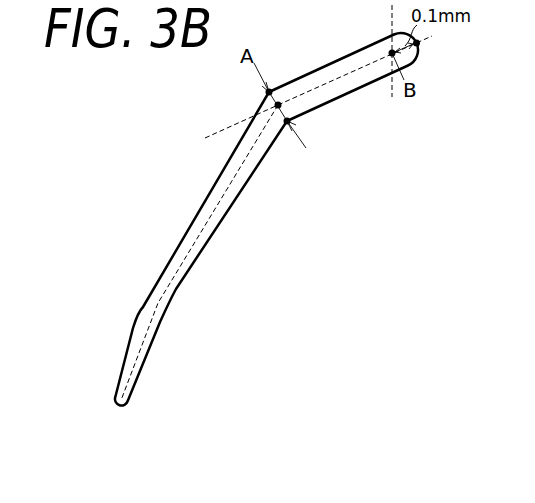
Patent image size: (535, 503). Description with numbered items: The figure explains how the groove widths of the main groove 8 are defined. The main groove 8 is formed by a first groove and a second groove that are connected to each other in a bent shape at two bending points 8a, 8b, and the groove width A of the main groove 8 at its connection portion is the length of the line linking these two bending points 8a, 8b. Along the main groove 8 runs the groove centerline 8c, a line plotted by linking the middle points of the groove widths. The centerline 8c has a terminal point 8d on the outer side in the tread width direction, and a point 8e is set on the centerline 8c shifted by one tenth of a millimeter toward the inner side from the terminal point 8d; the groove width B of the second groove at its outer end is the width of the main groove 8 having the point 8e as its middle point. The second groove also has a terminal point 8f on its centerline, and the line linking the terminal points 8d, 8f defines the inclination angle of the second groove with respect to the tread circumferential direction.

The main groove 8 is at (233, 205).
The bending point 8a is at (269, 92).
The bending point 8b is at (287, 121).
The groove centerline 8c is at (343, 77).
The terminal point 8d is at (416, 43).
The point 8e is at (392, 53).
The terminal point 8f is at (278, 105).